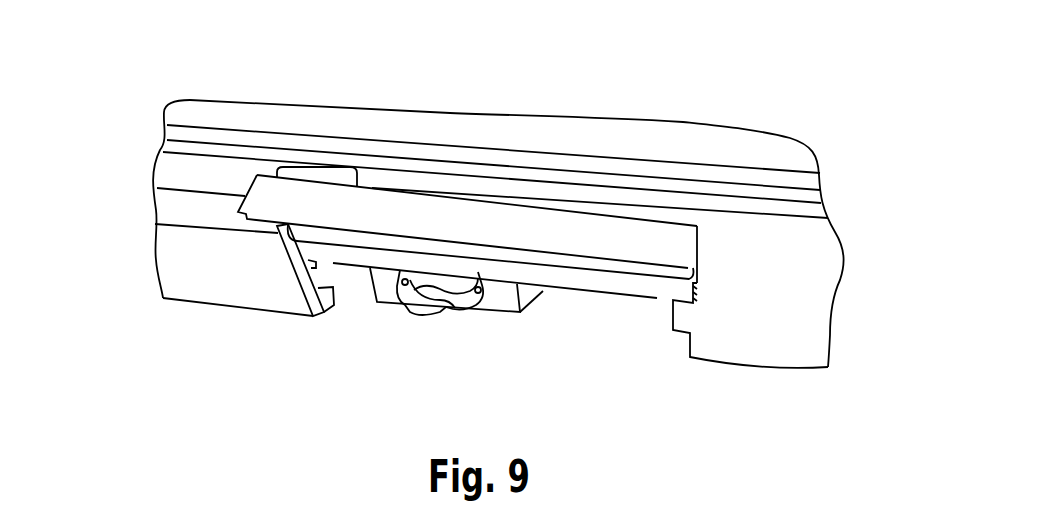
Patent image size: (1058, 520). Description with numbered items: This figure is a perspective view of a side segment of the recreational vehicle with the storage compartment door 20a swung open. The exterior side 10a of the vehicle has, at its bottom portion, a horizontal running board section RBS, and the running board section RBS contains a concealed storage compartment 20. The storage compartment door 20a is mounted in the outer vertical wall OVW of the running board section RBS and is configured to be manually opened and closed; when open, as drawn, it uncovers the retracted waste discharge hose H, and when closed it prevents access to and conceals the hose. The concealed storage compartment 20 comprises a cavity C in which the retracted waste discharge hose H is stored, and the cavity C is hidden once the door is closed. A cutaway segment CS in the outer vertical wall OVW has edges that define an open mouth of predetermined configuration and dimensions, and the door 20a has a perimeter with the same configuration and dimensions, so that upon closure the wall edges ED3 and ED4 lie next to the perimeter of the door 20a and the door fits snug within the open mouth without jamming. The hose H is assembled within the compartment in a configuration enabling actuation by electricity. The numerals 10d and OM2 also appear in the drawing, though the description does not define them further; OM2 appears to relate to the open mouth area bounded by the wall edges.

The exterior side 10a is at (778, 150).
The concealed storage compartment 20 is at (353, 318).
The storage compartment door 20a is at (634, 233).
The hook tab 10d is at (315, 307).
The wall edge ED3 is at (283, 244).
The wall edge ED4 is at (689, 289).
The running board section RBS is at (172, 238).
The outer vertical wall OVW is at (187, 258).
The second outer member OM2 is at (215, 288).
The cutaway segment CS is at (426, 337).
The waste discharge hose H is at (503, 310).
The cavity C is at (654, 292).